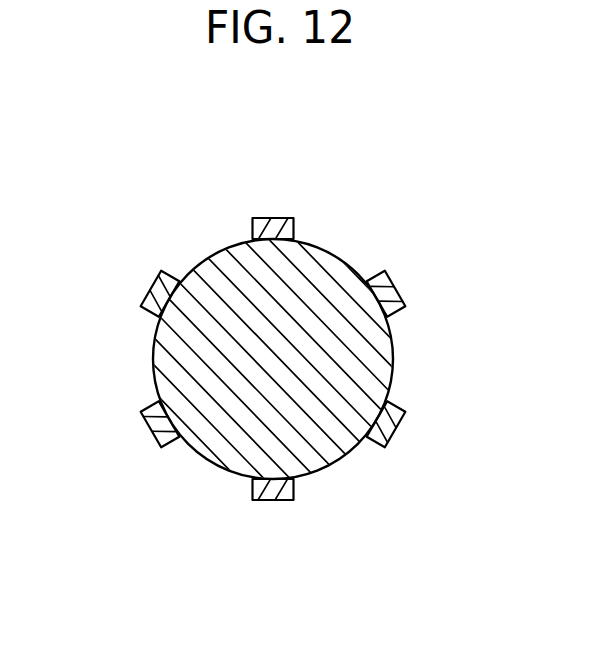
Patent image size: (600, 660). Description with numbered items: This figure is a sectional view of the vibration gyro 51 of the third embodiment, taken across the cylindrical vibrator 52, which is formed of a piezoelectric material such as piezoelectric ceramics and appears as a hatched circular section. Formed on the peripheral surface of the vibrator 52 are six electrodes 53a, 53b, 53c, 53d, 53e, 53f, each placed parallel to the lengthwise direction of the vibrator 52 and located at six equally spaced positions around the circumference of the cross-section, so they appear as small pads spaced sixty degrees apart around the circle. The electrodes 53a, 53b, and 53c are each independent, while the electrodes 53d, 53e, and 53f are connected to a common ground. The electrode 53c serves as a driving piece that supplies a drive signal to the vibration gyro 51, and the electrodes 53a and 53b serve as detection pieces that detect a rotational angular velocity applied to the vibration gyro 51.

The vibration gyro 51 is at (362, 214).
The vibrator 52 is at (340, 364).
The electrode 53a is at (150, 424).
The electrode 53b is at (389, 433).
The electrode 53c is at (270, 219).
The electrode 53d is at (395, 289).
The electrode 53e is at (156, 289).
The electrode 53f is at (268, 499).